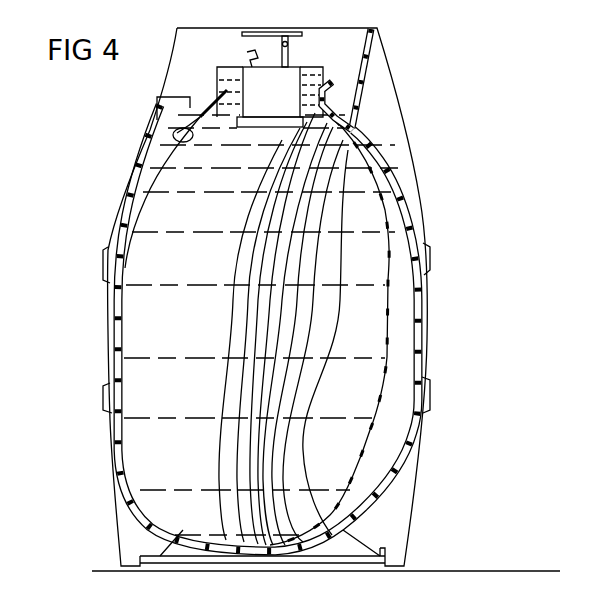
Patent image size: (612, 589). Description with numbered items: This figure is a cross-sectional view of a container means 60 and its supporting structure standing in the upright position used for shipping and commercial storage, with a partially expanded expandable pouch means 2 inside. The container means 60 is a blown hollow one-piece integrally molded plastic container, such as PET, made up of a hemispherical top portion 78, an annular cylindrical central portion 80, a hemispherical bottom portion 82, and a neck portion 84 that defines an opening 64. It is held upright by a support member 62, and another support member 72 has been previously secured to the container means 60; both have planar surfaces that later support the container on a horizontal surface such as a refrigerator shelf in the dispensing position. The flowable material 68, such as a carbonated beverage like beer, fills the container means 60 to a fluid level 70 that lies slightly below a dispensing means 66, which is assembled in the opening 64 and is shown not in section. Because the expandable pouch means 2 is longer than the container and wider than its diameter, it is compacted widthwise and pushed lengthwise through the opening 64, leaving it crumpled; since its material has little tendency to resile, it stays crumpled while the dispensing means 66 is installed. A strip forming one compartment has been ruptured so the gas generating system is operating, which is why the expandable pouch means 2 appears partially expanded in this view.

The expandable pouch means 2 is at (400, 285).
The container means 60 is at (427, 322).
The support member 62 is at (414, 486).
The opening 64 is at (300, 93).
The dispensing means 66 is at (302, 56).
The flowable material 68 is at (140, 345).
The fluid level 70 is at (178, 119).
The support member 72 is at (410, 170).
The hemispherical top portion 78 is at (415, 197).
The annular cylindrical central portion 80 is at (423, 300).
The hemispherical bottom portion 82 is at (414, 431).
The neck portion 84 is at (330, 100).